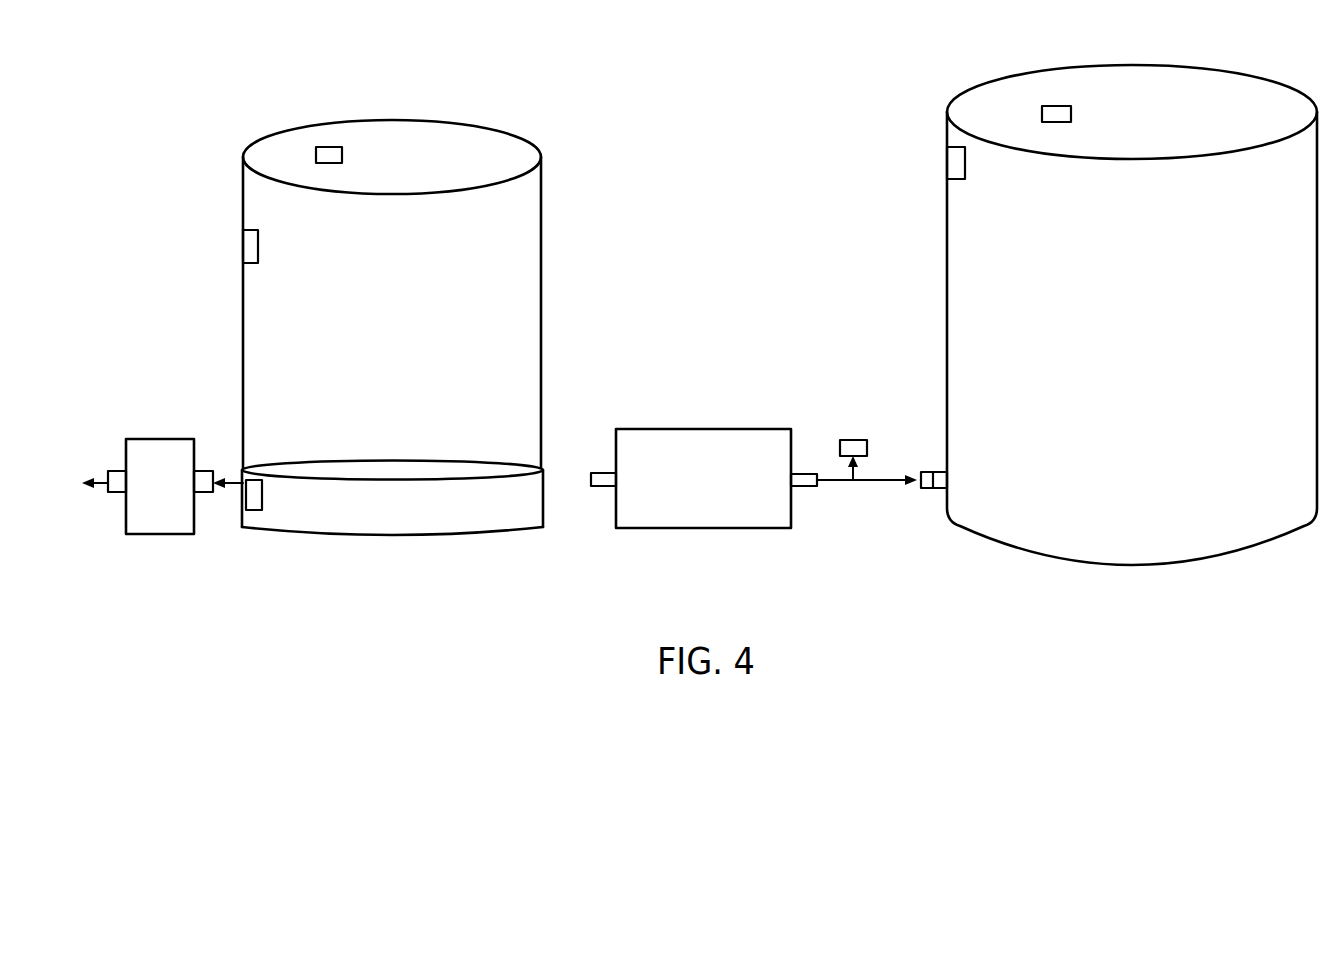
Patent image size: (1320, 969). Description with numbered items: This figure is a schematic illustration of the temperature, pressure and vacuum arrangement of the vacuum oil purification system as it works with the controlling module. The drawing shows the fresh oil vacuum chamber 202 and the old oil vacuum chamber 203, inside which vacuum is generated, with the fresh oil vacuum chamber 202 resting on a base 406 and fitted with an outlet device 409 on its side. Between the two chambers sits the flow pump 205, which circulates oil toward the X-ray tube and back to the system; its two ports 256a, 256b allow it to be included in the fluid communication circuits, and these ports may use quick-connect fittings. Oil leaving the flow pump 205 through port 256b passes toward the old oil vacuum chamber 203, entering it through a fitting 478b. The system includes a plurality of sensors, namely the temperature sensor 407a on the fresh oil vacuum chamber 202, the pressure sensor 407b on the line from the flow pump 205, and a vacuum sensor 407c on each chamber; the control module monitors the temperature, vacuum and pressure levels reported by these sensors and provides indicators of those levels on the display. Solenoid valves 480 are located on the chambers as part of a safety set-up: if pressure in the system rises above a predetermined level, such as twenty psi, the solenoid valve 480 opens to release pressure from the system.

The fresh oil vacuum chamber 202 is at (543, 306).
The old oil vacuum chamber 203 is at (972, 280).
The flow pump 205 is at (760, 515).
The port 256a is at (598, 490).
The port 256b is at (808, 490).
The tank base 406 is at (442, 517).
The temperature sensor 407a is at (262, 501).
The pressure sensor 407b is at (854, 437).
The vacuum sensor 407c is at (243, 244).
The valve 409 is at (164, 527).
The inlet port 478b is at (934, 470).
The solenoid valve 480 is at (342, 153).